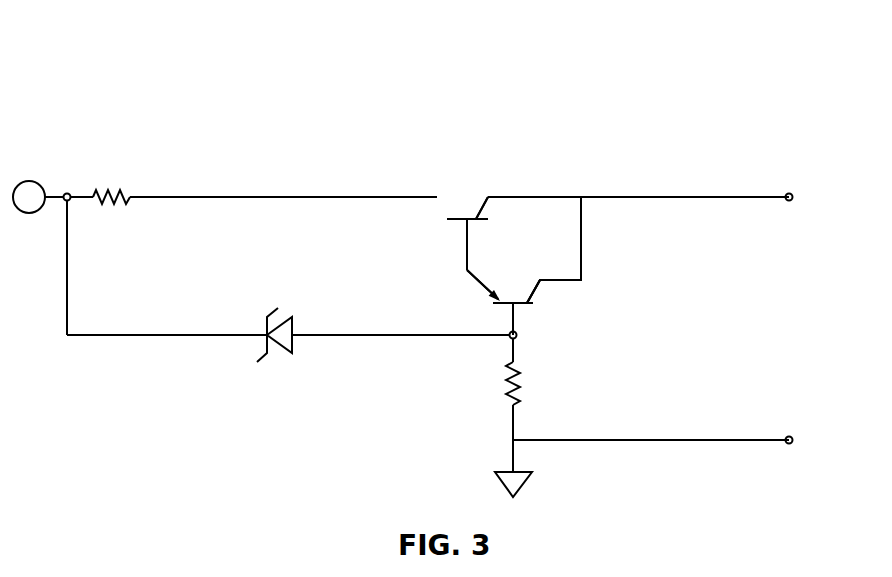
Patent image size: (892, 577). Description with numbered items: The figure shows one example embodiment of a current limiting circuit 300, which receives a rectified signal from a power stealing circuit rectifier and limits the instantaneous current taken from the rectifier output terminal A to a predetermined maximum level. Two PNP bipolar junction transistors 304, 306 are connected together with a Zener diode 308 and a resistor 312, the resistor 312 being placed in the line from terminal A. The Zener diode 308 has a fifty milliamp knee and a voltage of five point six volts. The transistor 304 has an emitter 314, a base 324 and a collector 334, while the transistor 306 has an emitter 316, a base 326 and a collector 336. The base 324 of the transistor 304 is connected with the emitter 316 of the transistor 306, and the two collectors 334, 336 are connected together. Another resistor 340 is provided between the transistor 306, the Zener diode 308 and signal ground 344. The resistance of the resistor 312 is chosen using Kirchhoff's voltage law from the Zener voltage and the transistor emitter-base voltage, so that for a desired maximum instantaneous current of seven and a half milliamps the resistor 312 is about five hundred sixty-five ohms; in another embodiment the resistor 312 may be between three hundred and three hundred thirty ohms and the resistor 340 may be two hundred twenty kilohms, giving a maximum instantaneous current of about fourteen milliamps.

The current limiting circuit 300 is at (158, 57).
The PNP bipolar junction transistor 304 is at (470, 219).
The PNP bipolar junction transistor 306 is at (518, 305).
The Zener diode 308 is at (293, 345).
The resistor 312 is at (108, 190).
The emitter 314 is at (449, 212).
The emitter 316 is at (475, 276).
The base 324 is at (465, 238).
The base 326 is at (511, 320).
The collector 334 is at (498, 197).
The collector 336 is at (538, 287).
The resistor 340 is at (518, 380).
The signal ground 344 is at (525, 478).